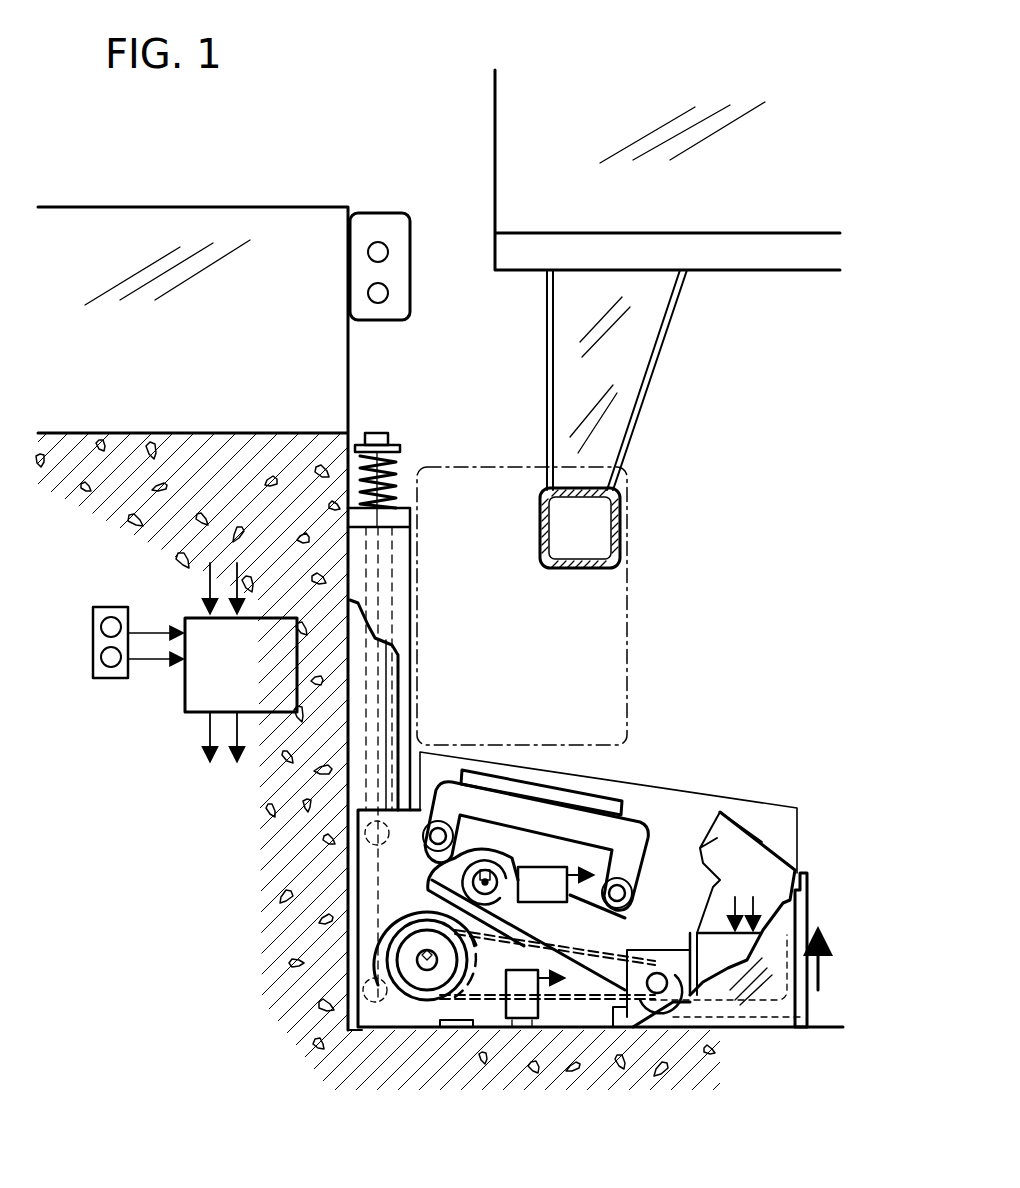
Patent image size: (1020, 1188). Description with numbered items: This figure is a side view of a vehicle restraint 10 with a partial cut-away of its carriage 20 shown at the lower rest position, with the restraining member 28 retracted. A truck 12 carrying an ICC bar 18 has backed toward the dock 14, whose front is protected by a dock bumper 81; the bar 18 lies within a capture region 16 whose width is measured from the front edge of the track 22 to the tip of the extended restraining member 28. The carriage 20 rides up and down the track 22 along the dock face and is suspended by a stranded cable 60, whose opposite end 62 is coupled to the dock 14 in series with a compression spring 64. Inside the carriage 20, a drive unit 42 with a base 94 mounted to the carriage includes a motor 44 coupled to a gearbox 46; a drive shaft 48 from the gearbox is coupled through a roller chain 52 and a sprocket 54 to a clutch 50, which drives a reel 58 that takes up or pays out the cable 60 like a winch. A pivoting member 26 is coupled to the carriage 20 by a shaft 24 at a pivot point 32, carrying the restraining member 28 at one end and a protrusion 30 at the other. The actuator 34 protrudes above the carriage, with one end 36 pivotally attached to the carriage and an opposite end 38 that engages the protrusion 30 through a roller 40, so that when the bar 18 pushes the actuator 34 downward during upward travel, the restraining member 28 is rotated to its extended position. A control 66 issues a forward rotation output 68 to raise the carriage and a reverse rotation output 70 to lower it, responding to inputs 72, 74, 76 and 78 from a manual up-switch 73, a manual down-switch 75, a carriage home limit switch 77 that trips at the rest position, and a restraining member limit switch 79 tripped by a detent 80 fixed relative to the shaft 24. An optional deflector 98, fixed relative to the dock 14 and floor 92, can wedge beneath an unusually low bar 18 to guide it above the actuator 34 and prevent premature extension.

The vehicle restraint 10 is at (706, 568).
The truck 12 is at (494, 200).
The dock 14 is at (350, 407).
The capture region 16 is at (452, 467).
The ICC bar 18 is at (540, 545).
The carriage 20 is at (808, 913).
The track 22 is at (405, 690).
The shaft 24 is at (510, 870).
The pivoting member 26 is at (502, 932).
The restraining member 28 is at (755, 843).
The protrusion 30 is at (432, 870).
The pivot point 32 is at (480, 884).
The actuator 34 is at (513, 787).
The end 36 is at (633, 898).
The opposite end 38 is at (425, 800).
The roller 40 is at (385, 812).
The drive unit 42 is at (690, 933).
The motor 44 is at (735, 969).
The gearbox 46 is at (635, 950).
The drive shaft 48 is at (663, 985).
The clutch 50 is at (403, 988).
The roller chain 52 is at (567, 943).
The sprocket 54 is at (412, 983).
The reel 58 is at (377, 948).
The stranded cable 60 is at (405, 740).
The opposite end 62 is at (365, 513).
The compression spring 64 is at (400, 468).
The control 66 is at (241, 665).
The forward rotation output 68 is at (240, 728).
The reverse rotation output 70 is at (207, 725).
The input 72 is at (157, 632).
The up-switch 73 is at (100, 625).
The input 74 is at (160, 660).
The down-switch 75 is at (100, 655).
The input 76 is at (207, 585).
The carriage home limit switch 77 is at (505, 1003).
The input 78 is at (235, 577).
The restraining member limit switch 79 is at (555, 884).
The detent 80 is at (497, 897).
The dock bumper 81 is at (367, 212).
The floor 92 is at (825, 1025).
The base 94 is at (600, 1010).
The deflector 98 is at (593, 777).